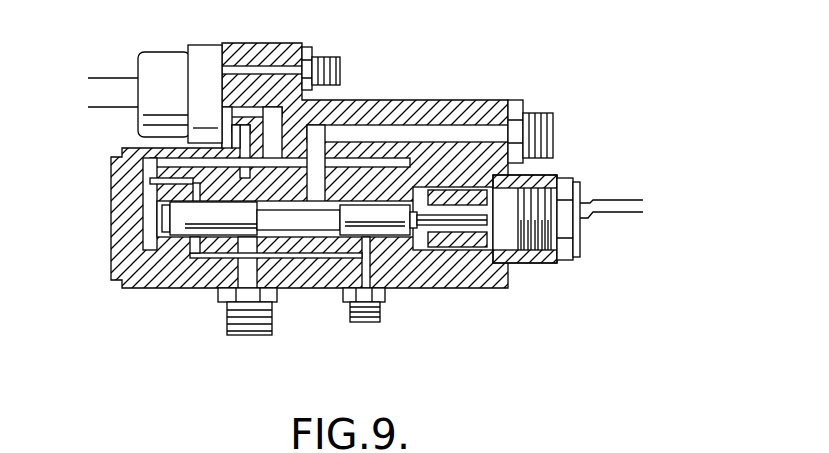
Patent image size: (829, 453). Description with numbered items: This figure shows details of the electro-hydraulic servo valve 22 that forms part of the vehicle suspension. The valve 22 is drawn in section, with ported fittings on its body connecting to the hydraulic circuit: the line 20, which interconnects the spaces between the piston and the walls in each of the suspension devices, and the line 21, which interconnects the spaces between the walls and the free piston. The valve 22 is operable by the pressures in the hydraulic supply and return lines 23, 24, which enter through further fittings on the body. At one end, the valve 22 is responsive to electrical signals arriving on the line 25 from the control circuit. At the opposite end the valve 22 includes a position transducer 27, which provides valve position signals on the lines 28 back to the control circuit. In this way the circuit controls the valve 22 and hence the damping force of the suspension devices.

The line 20 is at (250, 335).
The line 21 is at (553, 136).
The electro-hydraulic servo valve 22 is at (412, 317).
The hydraulic supply line 23 is at (343, 70).
The hydraulic return line 24 is at (365, 322).
The line 25 is at (105, 77).
The position transducer 27 is at (500, 228).
The lines 28 is at (622, 203).